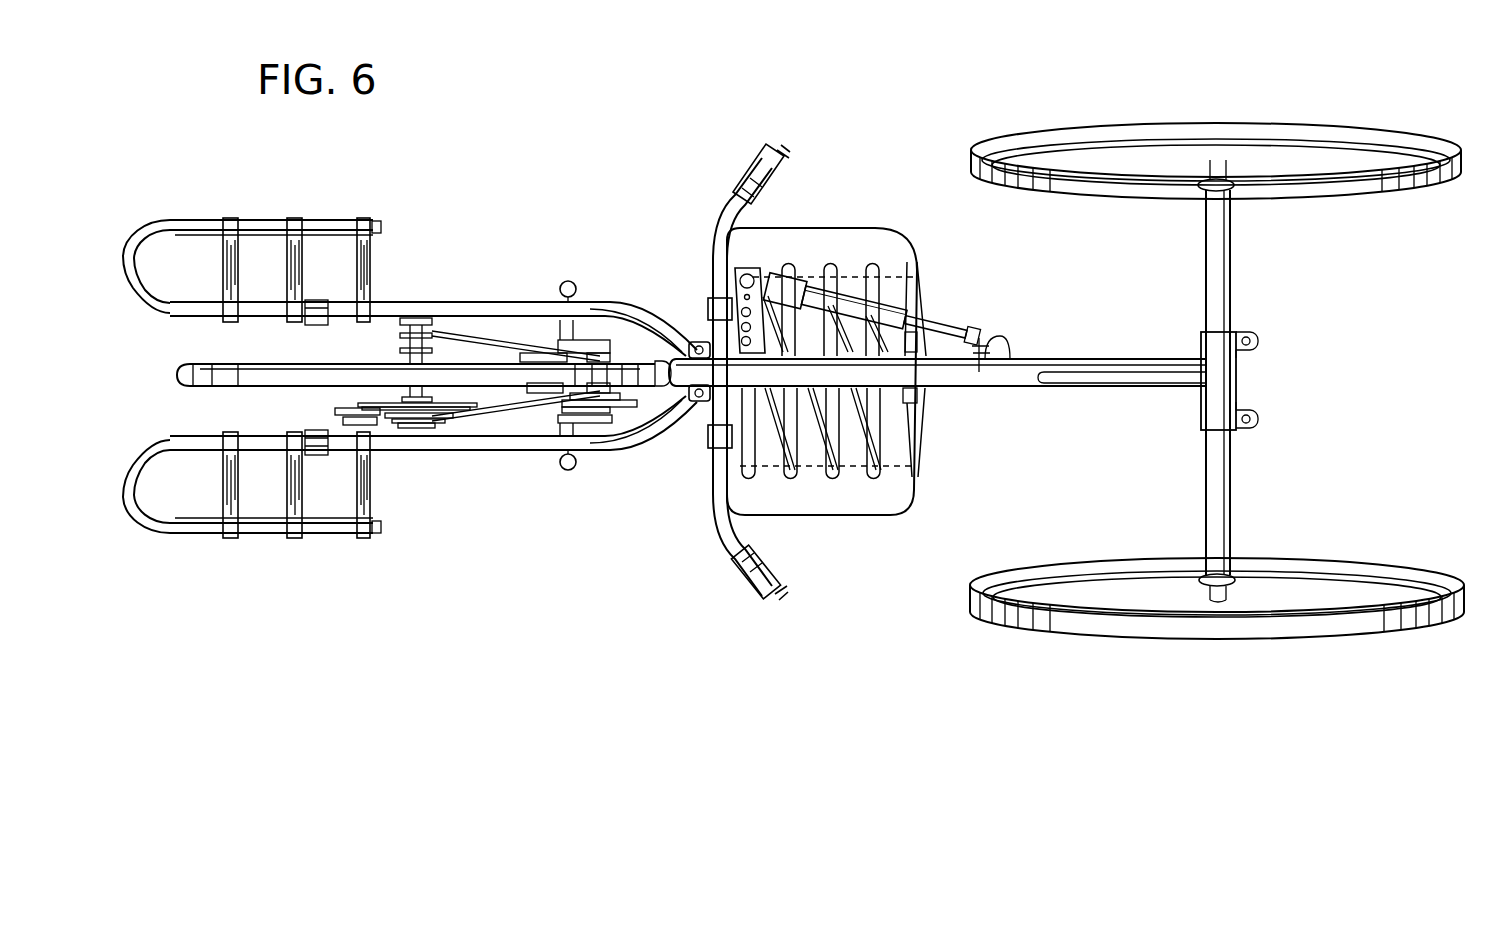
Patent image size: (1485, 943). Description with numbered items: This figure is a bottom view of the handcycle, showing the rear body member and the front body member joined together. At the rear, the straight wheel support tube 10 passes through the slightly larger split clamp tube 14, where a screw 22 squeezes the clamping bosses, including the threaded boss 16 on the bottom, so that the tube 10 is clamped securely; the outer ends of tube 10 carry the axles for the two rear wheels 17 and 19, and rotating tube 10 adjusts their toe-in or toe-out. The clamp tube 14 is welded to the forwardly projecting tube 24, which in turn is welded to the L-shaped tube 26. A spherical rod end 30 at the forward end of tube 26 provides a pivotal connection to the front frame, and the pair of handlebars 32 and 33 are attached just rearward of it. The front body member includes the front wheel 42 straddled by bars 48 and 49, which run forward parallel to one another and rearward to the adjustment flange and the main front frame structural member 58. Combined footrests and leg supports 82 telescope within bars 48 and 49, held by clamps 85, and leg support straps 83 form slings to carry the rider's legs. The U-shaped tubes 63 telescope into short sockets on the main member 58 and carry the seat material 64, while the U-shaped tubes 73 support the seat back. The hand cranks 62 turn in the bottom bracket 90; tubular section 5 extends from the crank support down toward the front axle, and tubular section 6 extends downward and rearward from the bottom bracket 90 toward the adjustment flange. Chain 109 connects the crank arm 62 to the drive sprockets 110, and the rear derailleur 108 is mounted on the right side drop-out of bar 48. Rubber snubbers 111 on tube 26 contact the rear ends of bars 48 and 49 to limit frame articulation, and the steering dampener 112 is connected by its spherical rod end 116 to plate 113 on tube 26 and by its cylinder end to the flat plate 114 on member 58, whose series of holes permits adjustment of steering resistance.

The tubular section 5 is at (490, 340).
The tubular section 6 is at (685, 350).
The wheel support tube 10 is at (1230, 290).
The clamp tube 14 is at (1207, 350).
The threaded boss 16 is at (1253, 350).
The wheel 17 is at (1390, 557).
The wheel 19 is at (1383, 133).
The screw 22 is at (1253, 335).
The projecting tube 24 is at (1103, 393).
The L-shaped tube 26 is at (1003, 388).
The spherical rod end 30 is at (642, 410).
The handlebar 32 is at (715, 527).
The handlebar 33 is at (723, 213).
The front wheel 42 is at (177, 382).
The bar 48 is at (543, 450).
The bar 49 is at (530, 300).
The main front frame structural member 58 is at (1003, 343).
The bicycle cranks 62 is at (567, 281).
The U-shaped tubes 63 is at (913, 440).
The seat material 64 is at (847, 227).
The U-shaped tubes 73 is at (923, 417).
The combined footrests and leg supports 82 is at (190, 222).
The leg support straps 83 is at (365, 268).
The clamp 85 is at (320, 300).
The bottom bracket 90 is at (620, 323).
The rear derailleur 108 is at (355, 412).
The bicycle chain 109 is at (497, 420).
The drive sprockets 110 is at (387, 400).
The rubber snubbers 111 is at (673, 357).
The steering dampener 112 is at (847, 287).
The plate 113 is at (993, 330).
The flat plate 114 is at (727, 287).
The spherical rod end 116 is at (957, 327).